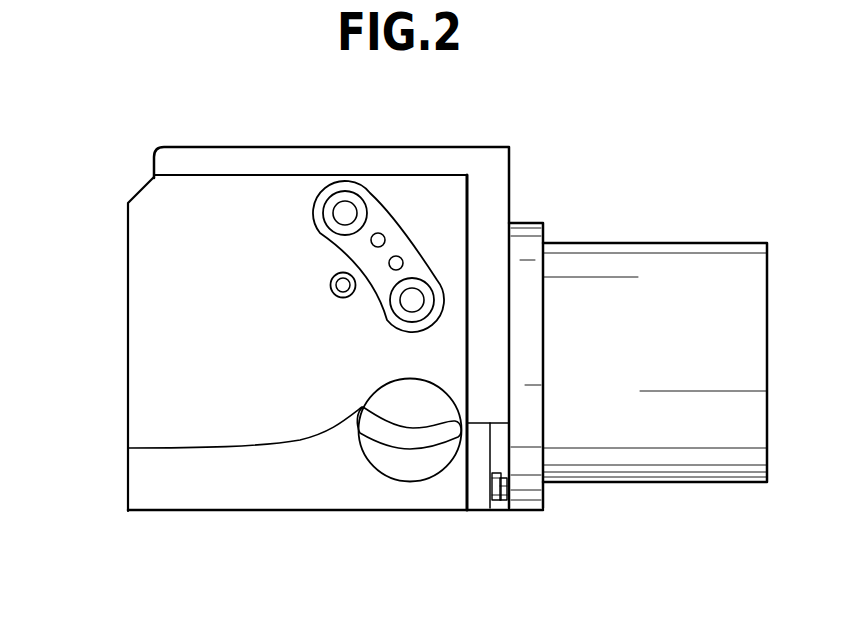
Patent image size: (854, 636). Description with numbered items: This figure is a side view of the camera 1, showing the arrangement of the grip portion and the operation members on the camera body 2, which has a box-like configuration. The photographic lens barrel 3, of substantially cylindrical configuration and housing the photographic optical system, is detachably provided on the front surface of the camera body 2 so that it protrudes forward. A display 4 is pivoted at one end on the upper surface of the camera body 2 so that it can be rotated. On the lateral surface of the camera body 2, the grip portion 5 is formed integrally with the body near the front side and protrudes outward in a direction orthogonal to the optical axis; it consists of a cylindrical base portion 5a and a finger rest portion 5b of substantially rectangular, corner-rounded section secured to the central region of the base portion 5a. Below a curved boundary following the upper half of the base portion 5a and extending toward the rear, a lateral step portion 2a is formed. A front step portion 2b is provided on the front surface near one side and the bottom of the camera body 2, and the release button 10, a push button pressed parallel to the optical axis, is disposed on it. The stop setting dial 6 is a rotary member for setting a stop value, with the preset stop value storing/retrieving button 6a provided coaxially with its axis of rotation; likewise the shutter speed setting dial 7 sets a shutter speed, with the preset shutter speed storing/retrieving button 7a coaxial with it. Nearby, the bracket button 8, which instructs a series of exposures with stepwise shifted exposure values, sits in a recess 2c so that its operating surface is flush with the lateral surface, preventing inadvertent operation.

The camera 1 is at (82, 193).
The camera body 2 is at (143, 330).
The lateral step portion 2a is at (168, 454).
The front step portion 2b is at (514, 460).
The recess 2c is at (345, 297).
The photographic lens barrel 3 is at (677, 282).
The display 4 is at (240, 141).
The grip portion 5 is at (383, 503).
The base portion 5a is at (412, 470).
The finger rest portion 5b is at (405, 438).
The stop setting dial 6 is at (340, 195).
The preset stop value storing/retrieving button 6a is at (345, 213).
The shutter speed setting dial 7 is at (499, 233).
The preset shutter speed storing/retrieving button 7a is at (412, 300).
The bracket button 8 is at (306, 315).
The release button 10 is at (503, 491).